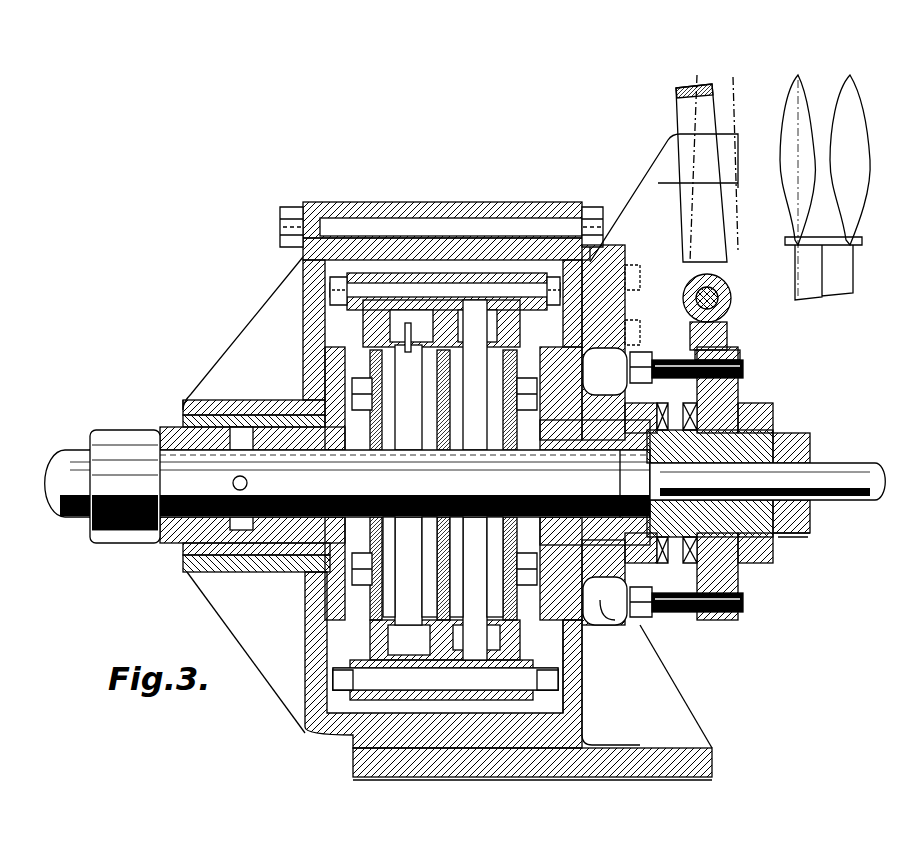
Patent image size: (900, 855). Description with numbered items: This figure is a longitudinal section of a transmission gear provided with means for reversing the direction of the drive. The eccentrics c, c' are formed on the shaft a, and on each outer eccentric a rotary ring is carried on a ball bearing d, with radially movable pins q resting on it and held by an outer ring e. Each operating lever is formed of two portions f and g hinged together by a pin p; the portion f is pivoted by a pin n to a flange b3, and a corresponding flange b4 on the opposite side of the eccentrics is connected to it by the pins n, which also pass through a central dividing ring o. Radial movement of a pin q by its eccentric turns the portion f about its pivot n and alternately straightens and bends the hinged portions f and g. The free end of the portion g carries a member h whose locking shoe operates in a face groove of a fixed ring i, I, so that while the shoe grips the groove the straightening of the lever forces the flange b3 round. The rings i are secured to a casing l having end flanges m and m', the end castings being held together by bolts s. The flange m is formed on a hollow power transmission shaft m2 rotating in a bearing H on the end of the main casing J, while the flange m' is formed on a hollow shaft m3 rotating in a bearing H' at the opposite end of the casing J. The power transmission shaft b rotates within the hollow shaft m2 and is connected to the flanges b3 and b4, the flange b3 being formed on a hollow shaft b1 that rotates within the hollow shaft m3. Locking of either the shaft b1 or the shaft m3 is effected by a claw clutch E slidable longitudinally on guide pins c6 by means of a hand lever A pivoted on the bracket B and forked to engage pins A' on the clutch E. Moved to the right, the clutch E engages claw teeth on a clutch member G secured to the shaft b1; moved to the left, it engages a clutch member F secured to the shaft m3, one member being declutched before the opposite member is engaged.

The fixed ring I is at (345, 222).
The fixed ring i is at (508, 310).
The lever shoe member h is at (406, 322).
The casing l is at (430, 276).
The bolts s is at (447, 290).
The end flange m' is at (614, 308).
The bracket B is at (728, 264).
The hand lever A is at (816, 187).
The end flange m is at (295, 330).
The lever portion f is at (312, 386).
The flange b4 is at (358, 468).
The lever portion g is at (405, 360).
The central dividing ring o is at (462, 480).
The lever pivot pin n is at (540, 610).
The flange b3 is at (512, 358).
The hollow power transmission shaft m2 is at (125, 430).
The power transmitting shaft b is at (72, 460).
The bearing H' is at (605, 372).
The guide pins c6 is at (743, 382).
The claw clutch E is at (738, 398).
The clutch member G is at (773, 410).
The hollow shaft b1 is at (793, 452).
The shaft a is at (845, 500).
The clutch pins A' is at (800, 560).
The hollow shaft m3 is at (752, 566).
The clutch member F is at (663, 612).
The bearing H is at (256, 579).
The eccentric c' is at (346, 576).
The ball bearing d is at (440, 545).
The outer ring e is at (430, 590).
The eccentric c is at (585, 610).
The radially movable pin q is at (520, 590).
The hinge pin p is at (560, 655).
The main casing J is at (478, 762).